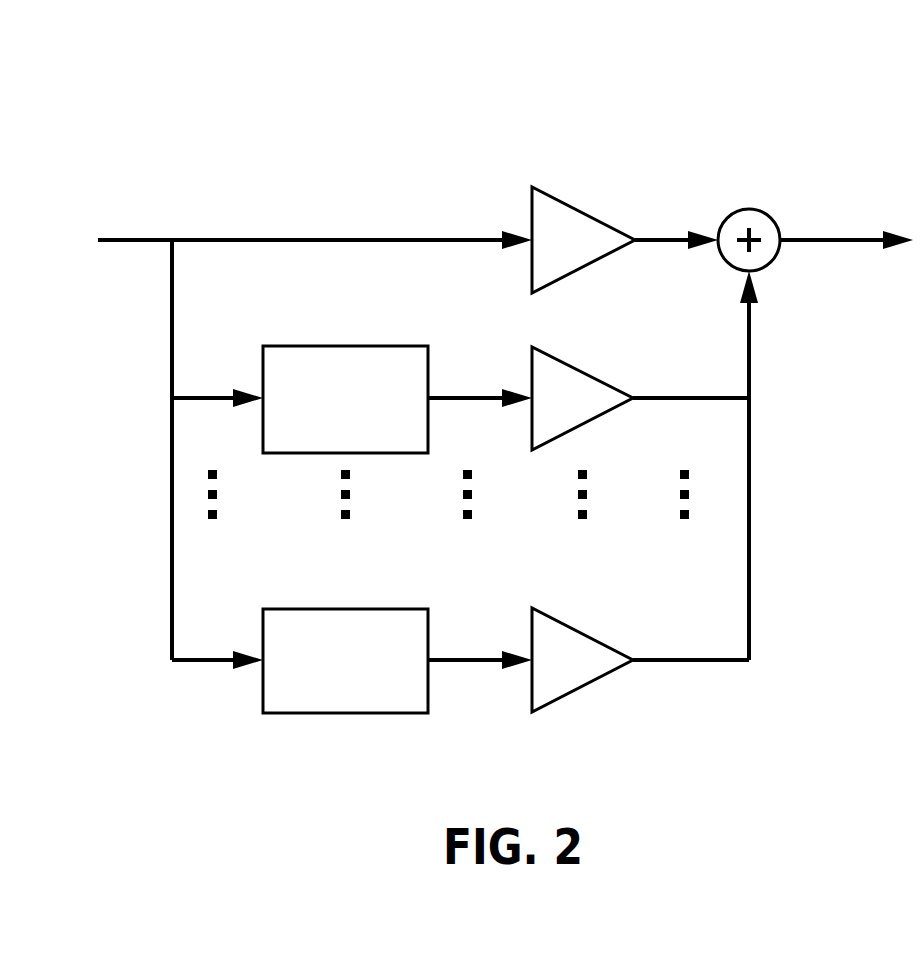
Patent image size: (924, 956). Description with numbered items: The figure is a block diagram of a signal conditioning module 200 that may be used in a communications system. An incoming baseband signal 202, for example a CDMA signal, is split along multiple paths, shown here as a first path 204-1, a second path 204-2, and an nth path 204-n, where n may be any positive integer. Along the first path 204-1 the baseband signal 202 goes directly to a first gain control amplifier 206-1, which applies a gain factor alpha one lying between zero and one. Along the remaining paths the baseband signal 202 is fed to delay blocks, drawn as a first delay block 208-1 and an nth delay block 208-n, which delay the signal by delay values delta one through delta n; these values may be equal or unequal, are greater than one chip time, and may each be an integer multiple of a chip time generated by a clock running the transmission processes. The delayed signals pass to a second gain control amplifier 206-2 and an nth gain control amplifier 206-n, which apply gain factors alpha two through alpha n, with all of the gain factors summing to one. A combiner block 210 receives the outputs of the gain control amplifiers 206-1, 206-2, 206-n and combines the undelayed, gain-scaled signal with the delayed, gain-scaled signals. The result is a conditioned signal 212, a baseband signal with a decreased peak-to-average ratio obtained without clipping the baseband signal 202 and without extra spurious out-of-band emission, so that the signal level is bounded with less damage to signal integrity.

The signal conditioning module 200 is at (517, 58).
The baseband signal 202 is at (120, 238).
The first path 204-1 is at (212, 238).
The second path 204-2 is at (212, 396).
The nth path 204-n is at (212, 658).
The first gain control amplifier 206-1 is at (593, 215).
The second gain control amplifier 206-2 is at (593, 375).
The nth gain control amplifier 206-n is at (593, 635).
The first delay block 208-1 is at (346, 345).
The nth delay block 208-n is at (346, 608).
The combiner block 210 is at (749, 208).
The conditioned signal 212 is at (862, 238).